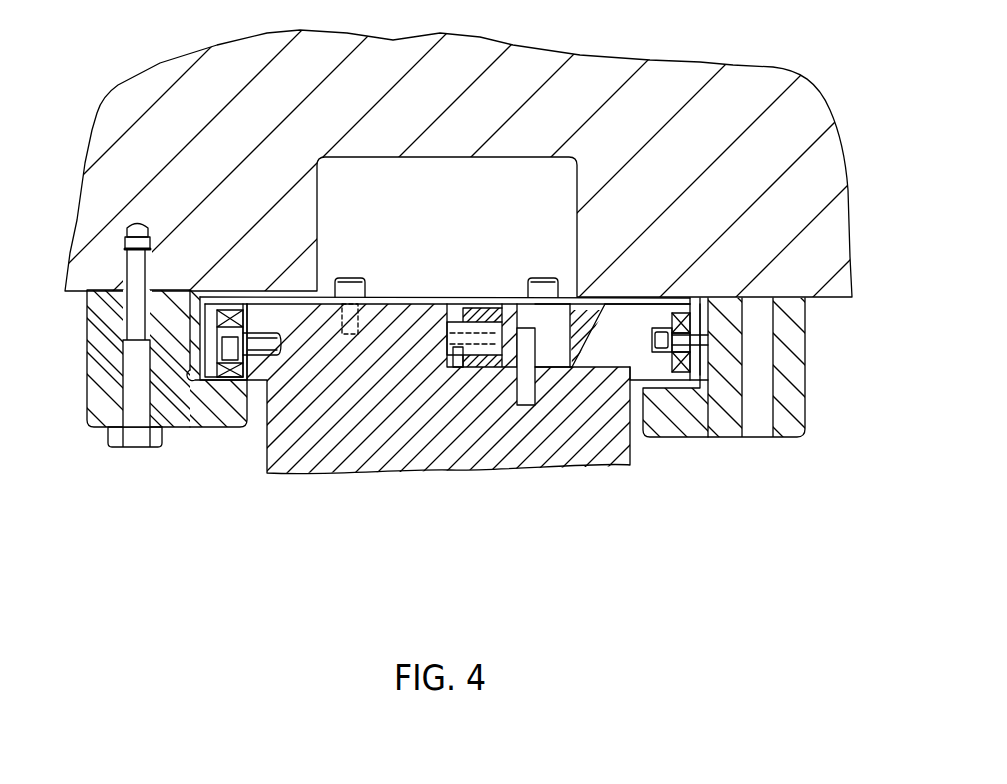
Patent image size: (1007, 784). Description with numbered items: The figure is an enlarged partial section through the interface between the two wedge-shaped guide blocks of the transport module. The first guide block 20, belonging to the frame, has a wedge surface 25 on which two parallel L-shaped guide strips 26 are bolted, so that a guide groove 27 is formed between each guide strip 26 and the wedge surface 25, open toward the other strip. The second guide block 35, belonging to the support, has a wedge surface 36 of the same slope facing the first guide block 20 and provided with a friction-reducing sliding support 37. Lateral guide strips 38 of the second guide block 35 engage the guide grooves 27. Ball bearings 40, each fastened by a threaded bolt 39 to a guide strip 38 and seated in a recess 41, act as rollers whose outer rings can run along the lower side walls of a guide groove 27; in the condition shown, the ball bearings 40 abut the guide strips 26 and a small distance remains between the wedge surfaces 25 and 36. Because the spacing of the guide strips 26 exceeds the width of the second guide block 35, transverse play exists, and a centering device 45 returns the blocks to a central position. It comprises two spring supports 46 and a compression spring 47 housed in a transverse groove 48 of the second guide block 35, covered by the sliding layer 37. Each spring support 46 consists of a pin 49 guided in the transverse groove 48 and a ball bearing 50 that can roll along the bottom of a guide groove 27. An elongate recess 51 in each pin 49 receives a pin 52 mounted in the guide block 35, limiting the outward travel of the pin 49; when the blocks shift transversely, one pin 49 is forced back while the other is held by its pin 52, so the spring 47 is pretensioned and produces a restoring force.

The guide block 20 is at (800, 122).
The wedge surface 25 is at (614, 314).
The guide strips 26 is at (104, 378).
The guide groove 27 is at (190, 380).
The second guide block 35 is at (332, 413).
The wedge surface 36 is at (432, 297).
The sliding support 37 is at (395, 297).
The guide strips 38 is at (257, 380).
The threaded bolt 39 is at (227, 340).
The ball bearing 40 is at (232, 292).
The recess 41 is at (196, 300).
The centering device 45 is at (486, 382).
The spring support 46 is at (720, 364).
The compression spring 47 is at (454, 372).
The transverse groove 48 is at (584, 366).
The pin 49 is at (623, 310).
The ball bearing 50 is at (698, 341).
The elongate recess 51 is at (553, 352).
The pin 52 is at (527, 407).